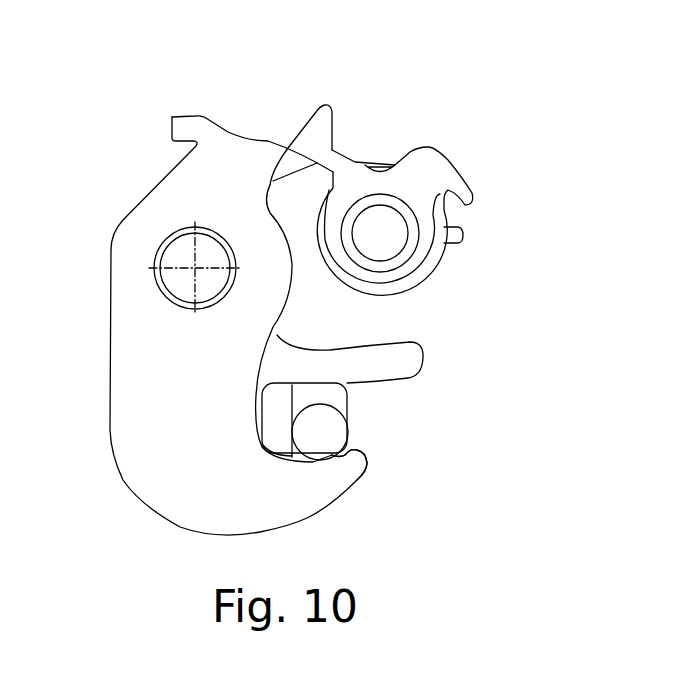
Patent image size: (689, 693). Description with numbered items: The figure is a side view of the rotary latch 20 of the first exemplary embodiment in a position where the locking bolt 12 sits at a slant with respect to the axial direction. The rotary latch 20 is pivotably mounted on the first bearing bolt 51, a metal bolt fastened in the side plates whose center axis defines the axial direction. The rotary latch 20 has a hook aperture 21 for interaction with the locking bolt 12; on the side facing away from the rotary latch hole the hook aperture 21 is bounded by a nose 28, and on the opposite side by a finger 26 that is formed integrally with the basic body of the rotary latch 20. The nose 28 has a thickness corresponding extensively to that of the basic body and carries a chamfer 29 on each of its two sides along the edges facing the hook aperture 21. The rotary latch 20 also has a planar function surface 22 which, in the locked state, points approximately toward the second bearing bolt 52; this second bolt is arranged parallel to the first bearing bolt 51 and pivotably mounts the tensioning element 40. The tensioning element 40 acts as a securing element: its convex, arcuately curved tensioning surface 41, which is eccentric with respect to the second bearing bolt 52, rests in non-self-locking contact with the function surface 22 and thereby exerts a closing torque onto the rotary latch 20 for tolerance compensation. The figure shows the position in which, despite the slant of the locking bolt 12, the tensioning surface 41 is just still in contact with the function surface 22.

The locking bolt 12 is at (322, 437).
The rotary latch 20 is at (133, 337).
The hook aperture 21 is at (262, 417).
The function surface 22 is at (333, 147).
The finger 26 is at (400, 360).
The nose 28 is at (340, 477).
The chamfer 29 is at (287, 457).
The tensioning element 40 is at (435, 172).
The tensioning surface 41 is at (312, 128).
The first bearing bolt 51 is at (190, 267).
The second bearing bolt 52 is at (383, 232).